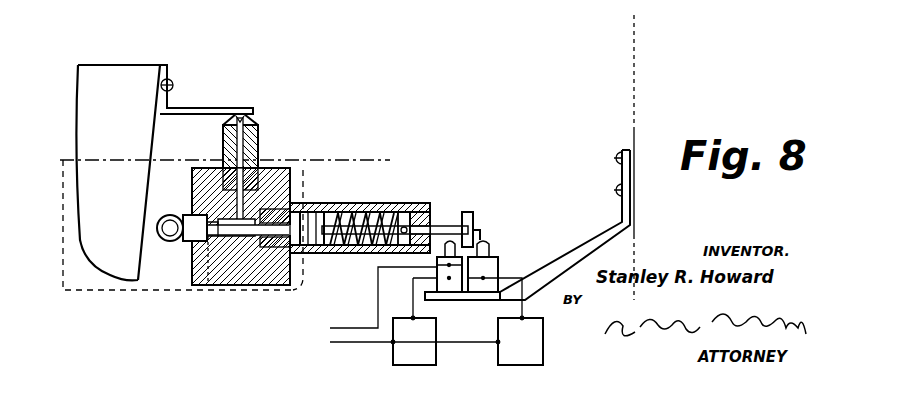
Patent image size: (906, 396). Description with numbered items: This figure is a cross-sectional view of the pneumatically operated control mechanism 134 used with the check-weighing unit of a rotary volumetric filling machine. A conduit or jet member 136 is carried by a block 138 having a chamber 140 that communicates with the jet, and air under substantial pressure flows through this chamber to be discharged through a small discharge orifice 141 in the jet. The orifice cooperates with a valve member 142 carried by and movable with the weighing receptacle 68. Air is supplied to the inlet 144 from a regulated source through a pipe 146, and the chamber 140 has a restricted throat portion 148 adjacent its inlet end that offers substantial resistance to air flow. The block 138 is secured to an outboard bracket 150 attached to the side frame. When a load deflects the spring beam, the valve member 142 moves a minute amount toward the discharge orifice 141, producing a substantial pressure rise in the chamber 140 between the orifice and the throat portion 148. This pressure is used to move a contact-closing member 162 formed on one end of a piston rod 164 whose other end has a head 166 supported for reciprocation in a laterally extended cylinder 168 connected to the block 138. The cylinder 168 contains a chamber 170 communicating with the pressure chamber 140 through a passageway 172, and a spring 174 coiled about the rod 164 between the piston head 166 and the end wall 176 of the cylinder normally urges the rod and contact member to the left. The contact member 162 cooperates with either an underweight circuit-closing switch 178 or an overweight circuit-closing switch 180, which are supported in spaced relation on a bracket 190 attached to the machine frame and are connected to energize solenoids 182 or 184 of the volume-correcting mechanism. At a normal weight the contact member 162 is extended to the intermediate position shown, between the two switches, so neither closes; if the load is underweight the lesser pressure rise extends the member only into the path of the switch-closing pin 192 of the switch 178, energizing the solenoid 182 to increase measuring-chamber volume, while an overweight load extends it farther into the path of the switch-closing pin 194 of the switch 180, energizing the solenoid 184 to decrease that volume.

The receptacle 68 is at (118, 172).
The pneumatically operated control mechanism 134 is at (423, 160).
The conduit or jet member 136 is at (260, 127).
The block 138 is at (282, 168).
The chamber 140 is at (240, 286).
The discharge orifice 141 is at (233, 120).
The valve member 142 is at (245, 107).
The inlet 144 is at (192, 240).
The pipe 146 is at (172, 216).
The restricted throat portion 148 is at (210, 287).
The outboard bracket 150 is at (103, 292).
The contact-closing member 162 is at (482, 230).
The piston rod 164 is at (440, 228).
The head 166 is at (320, 216).
The cylinder 168 is at (378, 204).
The chamber 170 is at (302, 247).
The passageway 172 is at (288, 262).
The spring 174 is at (353, 216).
The end wall 176 is at (448, 224).
The underweight circuit-closing switch 178 is at (456, 300).
The overweight circuit-closing switch 180 is at (499, 262).
The solenoid 182 is at (395, 352).
The solenoid 184 is at (541, 352).
The bracket 190 is at (580, 232).
The switch-closing pin 192 is at (456, 246).
The switch-closing pin 194 is at (488, 248).